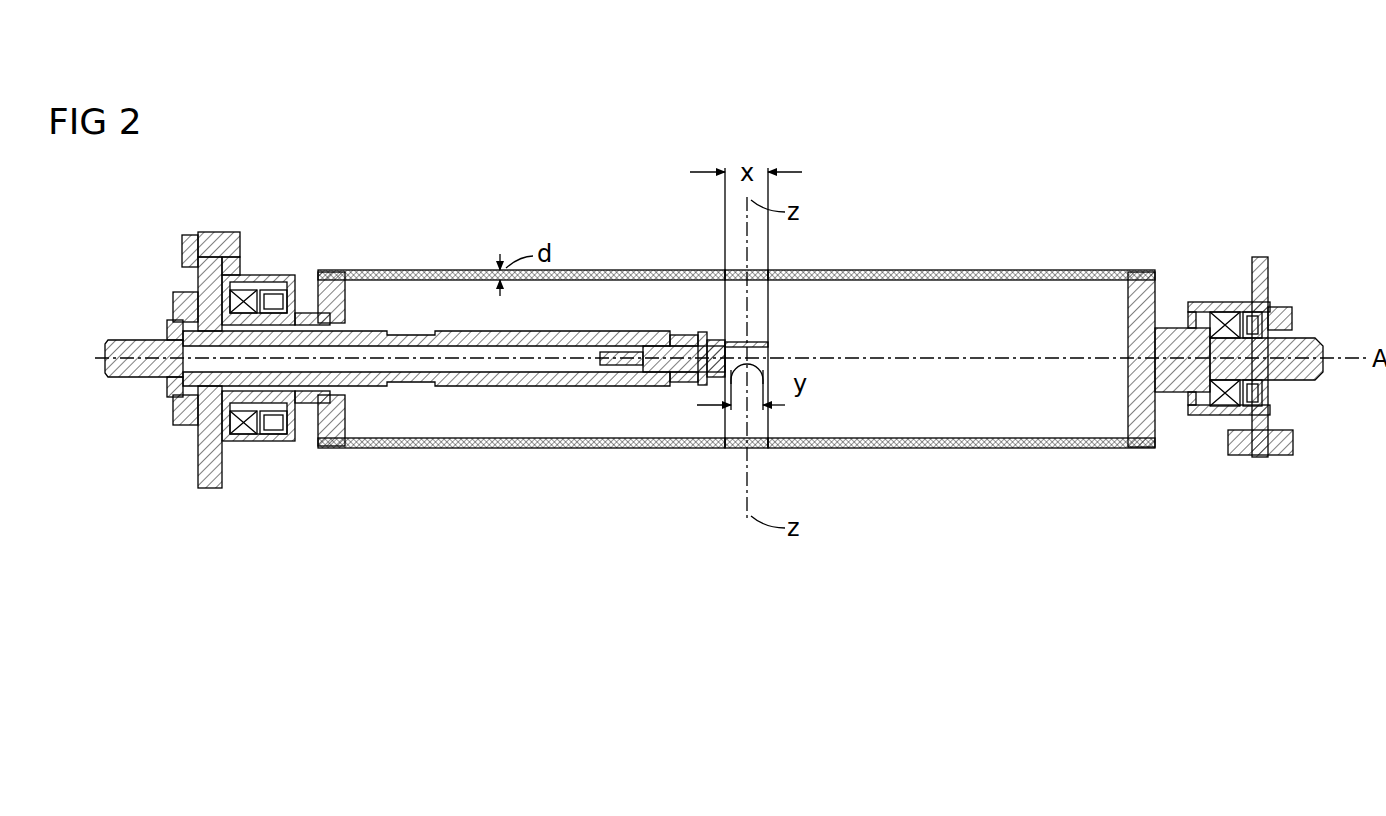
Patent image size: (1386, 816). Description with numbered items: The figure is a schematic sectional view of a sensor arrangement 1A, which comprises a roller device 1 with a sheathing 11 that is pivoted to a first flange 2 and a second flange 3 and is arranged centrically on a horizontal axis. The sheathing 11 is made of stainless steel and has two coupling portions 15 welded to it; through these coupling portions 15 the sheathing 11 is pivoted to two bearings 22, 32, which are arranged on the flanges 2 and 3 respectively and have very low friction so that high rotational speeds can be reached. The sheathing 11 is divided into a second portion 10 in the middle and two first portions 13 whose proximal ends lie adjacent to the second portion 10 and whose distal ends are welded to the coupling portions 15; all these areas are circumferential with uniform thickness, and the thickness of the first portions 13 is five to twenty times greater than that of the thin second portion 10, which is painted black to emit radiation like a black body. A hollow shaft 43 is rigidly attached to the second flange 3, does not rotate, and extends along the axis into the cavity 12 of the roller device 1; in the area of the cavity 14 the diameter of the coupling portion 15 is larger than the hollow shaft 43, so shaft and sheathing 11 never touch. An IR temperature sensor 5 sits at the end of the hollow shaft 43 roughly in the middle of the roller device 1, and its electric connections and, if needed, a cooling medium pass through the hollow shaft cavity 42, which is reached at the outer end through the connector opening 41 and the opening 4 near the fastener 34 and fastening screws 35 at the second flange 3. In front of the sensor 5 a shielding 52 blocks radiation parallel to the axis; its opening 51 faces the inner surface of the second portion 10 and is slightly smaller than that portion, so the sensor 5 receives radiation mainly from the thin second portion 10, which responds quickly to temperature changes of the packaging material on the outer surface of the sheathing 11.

The roller device 1 is at (906, 268).
The sensor arrangement 1A is at (482, 154).
The first flange 2 is at (1270, 276).
The second flange 3 is at (205, 465).
The opening 4 is at (121, 341).
The sensor 5 is at (666, 386).
The second portion 10 is at (740, 268).
The sheathing 11 is at (934, 449).
The cavity 12 is at (998, 298).
The first portion 13 is at (600, 270).
The cavity 14 is at (292, 403).
The coupling portion 15 is at (336, 270).
The bearing 22 is at (1232, 302).
The bearing 32 is at (243, 291).
The fastener 34 is at (178, 306).
The fastening screws 35 is at (175, 410).
The connector opening 41 is at (105, 364).
The hollow shaft cavity 42 is at (365, 387).
The hollow shaft 43 is at (492, 387).
The opening, aperture 51 is at (752, 378).
The shielding 52 is at (749, 344).